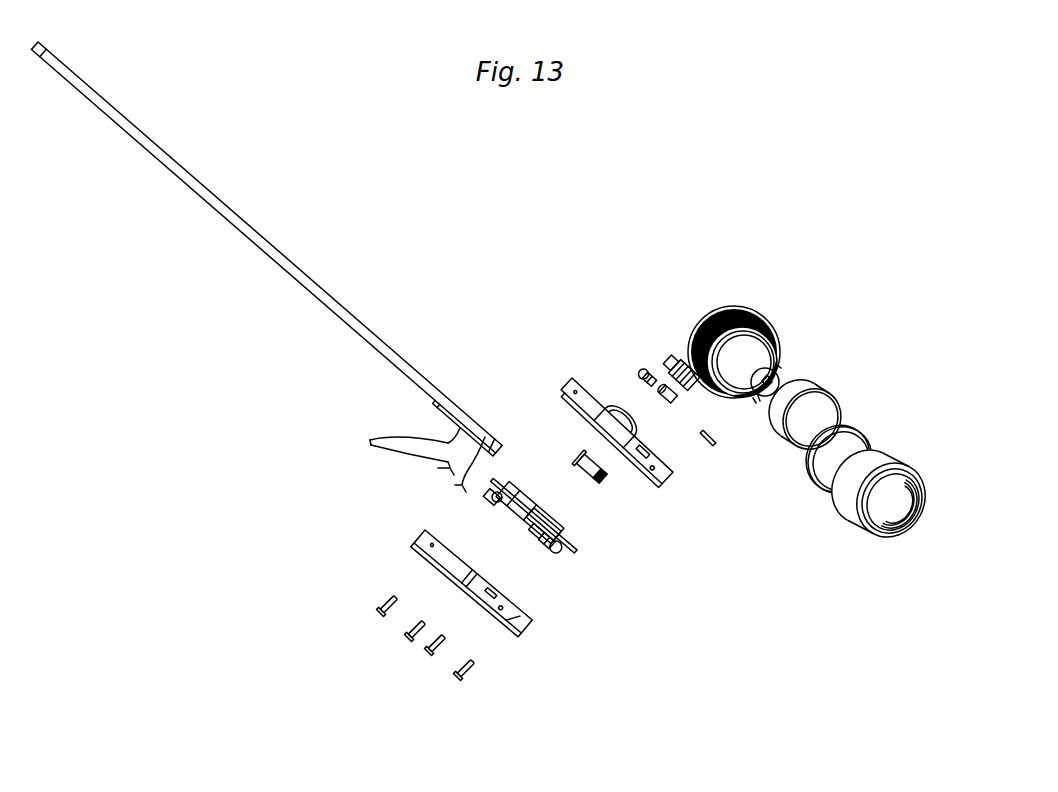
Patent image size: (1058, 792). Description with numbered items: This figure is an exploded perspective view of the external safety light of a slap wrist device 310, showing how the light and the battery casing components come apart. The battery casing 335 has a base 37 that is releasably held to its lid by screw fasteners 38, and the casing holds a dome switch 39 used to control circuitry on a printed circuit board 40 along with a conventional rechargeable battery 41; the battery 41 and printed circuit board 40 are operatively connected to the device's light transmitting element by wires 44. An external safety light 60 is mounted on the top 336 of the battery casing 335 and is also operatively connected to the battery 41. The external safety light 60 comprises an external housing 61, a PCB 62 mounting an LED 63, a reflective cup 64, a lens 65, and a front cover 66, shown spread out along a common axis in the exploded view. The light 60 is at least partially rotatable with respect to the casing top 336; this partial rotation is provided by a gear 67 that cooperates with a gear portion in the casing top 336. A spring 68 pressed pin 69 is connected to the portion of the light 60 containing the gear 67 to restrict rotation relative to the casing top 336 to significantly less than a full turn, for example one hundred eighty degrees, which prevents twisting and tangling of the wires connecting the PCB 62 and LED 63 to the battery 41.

The slap wrist device 310 is at (463, 206).
The base 37 is at (513, 618).
The screw fasteners 38 is at (455, 677).
The dome switch 39 is at (493, 500).
The printed circuit board 40 is at (567, 531).
The battery 41 is at (542, 511).
The wires 44 is at (419, 460).
The external safety light 60 is at (703, 293).
The external housing 61 is at (713, 313).
The PCB 62 is at (777, 364).
The LED 63 is at (767, 393).
The reflective cup 64 is at (793, 388).
The lens 65 is at (855, 428).
The front cover 66 is at (858, 540).
The gear 67 is at (664, 348).
The spring 68 is at (641, 371).
The pin 69 is at (674, 401).
The battery casing 335 is at (575, 366).
The top 336 is at (672, 480).